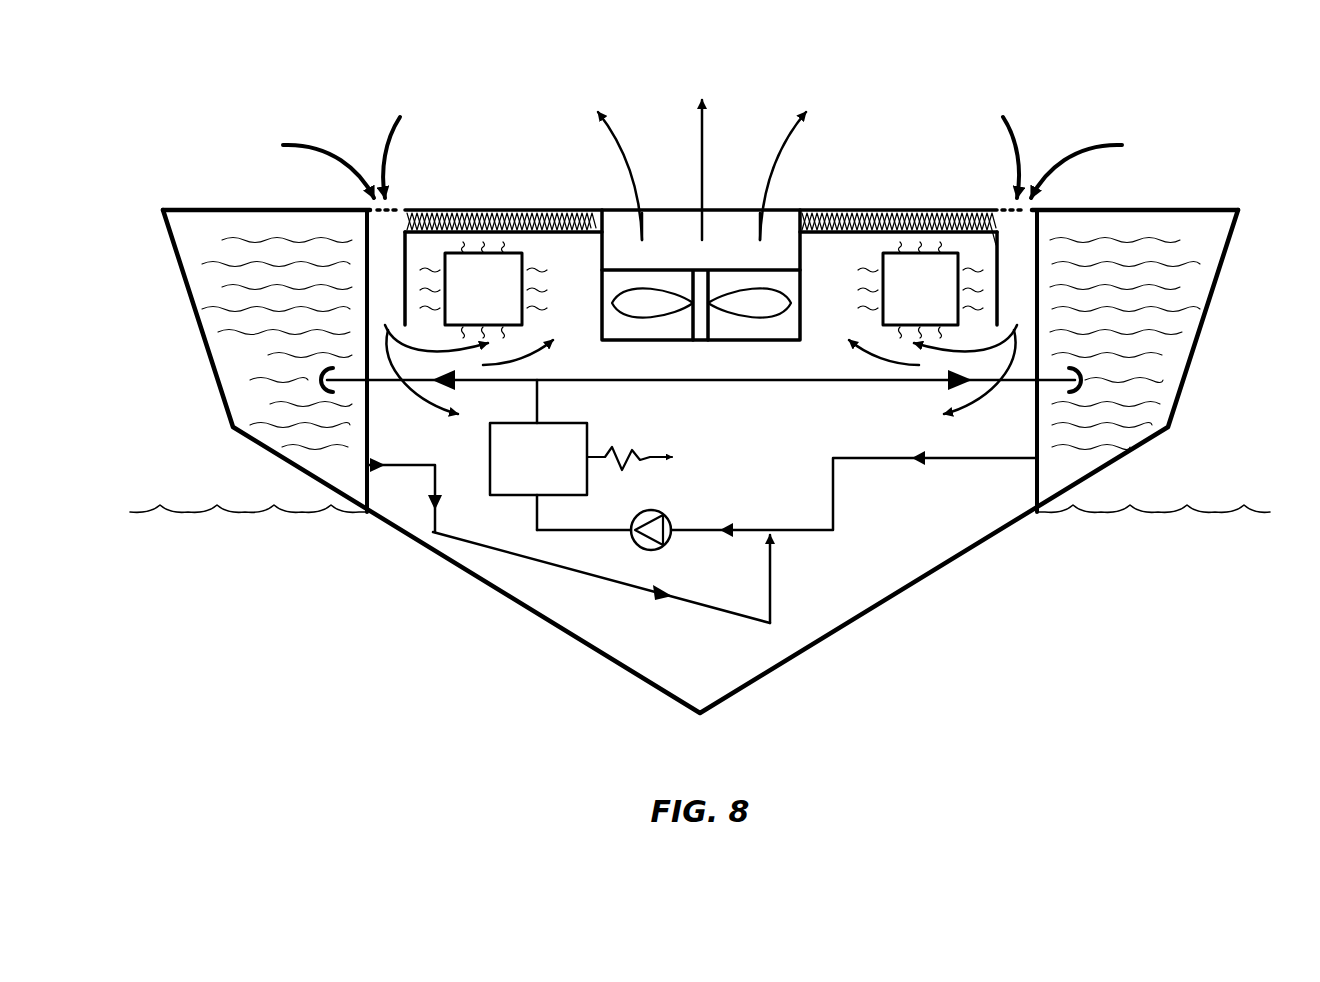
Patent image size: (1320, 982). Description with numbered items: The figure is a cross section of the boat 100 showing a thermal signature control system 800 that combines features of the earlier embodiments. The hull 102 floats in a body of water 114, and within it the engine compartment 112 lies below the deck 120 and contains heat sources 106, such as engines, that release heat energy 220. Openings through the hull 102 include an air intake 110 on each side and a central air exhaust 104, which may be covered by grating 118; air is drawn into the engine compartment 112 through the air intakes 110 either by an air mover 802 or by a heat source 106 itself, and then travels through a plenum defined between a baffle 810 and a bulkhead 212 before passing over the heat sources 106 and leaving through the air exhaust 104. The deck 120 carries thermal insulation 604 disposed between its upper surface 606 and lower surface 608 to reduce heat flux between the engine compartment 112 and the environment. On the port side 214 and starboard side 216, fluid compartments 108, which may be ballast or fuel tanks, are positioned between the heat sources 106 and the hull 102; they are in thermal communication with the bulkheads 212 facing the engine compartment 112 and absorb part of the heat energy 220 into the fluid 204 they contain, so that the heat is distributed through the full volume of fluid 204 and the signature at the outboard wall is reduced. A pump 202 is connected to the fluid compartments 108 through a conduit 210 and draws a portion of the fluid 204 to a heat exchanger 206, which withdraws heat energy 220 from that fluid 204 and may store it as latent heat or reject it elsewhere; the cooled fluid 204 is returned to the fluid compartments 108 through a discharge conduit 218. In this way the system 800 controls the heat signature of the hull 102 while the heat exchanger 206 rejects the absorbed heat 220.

The boat 100 is at (598, 170).
The hull 102 is at (822, 633).
The air exhaust 104 is at (723, 235).
The heat source 106 is at (701, 290).
The fluid compartment 108 is at (200, 233).
The air intake 110 is at (395, 200).
The engine compartment 112 is at (890, 422).
The body of water 114 is at (700, 567).
The grating 118 is at (385, 205).
The deck 120 is at (490, 210).
The pump 202 is at (651, 550).
The fluid 204 is at (248, 365).
The heat exchanger 206 is at (538, 455).
The conduit 210 is at (833, 495).
The bulkhead 212 is at (370, 490).
The port side 214 is at (187, 295).
The starboard side 216 is at (1222, 300).
The discharge conduit 218 is at (773, 382).
The heat energy 220 is at (558, 255).
The thermal insulation 604 is at (920, 205).
The upper surface 606 is at (825, 210).
The lower surface 608 is at (888, 233).
The thermal signature control system 800 is at (862, 100).
The air mover 802 is at (655, 300).
The baffle 810 is at (403, 252).